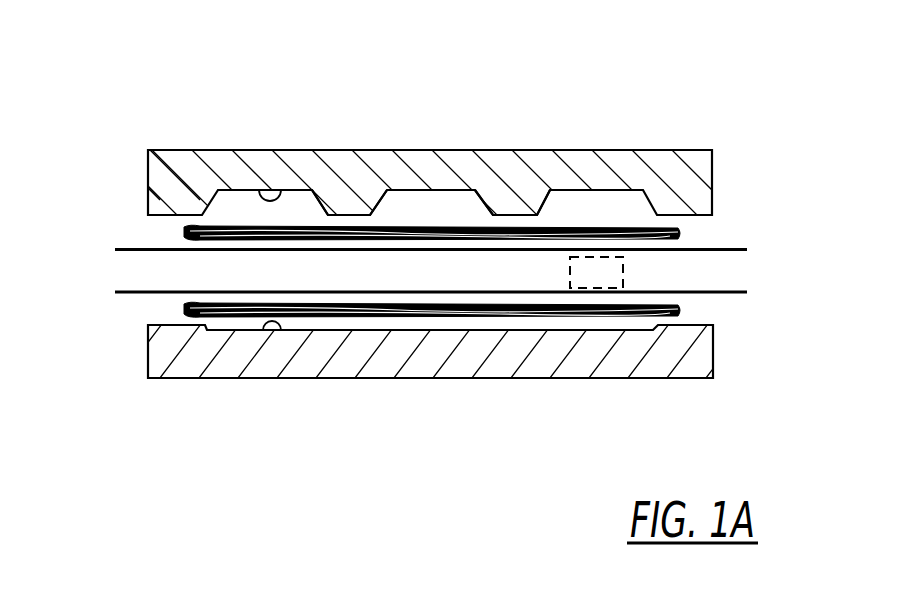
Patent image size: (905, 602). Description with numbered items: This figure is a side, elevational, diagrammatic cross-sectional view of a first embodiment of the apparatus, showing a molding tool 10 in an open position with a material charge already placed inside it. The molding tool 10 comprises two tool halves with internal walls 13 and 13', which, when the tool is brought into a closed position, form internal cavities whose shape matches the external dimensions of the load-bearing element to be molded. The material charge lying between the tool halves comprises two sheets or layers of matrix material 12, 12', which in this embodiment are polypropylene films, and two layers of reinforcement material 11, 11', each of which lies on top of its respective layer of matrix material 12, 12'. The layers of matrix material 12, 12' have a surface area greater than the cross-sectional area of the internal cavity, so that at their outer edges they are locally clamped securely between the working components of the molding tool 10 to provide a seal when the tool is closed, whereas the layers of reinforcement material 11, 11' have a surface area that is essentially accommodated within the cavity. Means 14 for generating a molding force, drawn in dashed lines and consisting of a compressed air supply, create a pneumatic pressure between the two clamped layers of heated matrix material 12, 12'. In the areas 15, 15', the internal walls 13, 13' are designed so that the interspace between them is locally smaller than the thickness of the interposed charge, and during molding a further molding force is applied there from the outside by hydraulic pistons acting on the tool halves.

The molding tool 10 is at (133, 92).
The layer of reinforcement material 11 is at (367, 226).
The layer of reinforcement material 11' is at (366, 328).
The layer of matrix material 12 is at (435, 165).
The layer of matrix material 12' is at (431, 380).
The internal wall 13 is at (271, 142).
The internal wall 13' is at (237, 394).
The means for generating a molding force 14 is at (596, 262).
The area where the interspace is locally smaller 15 is at (349, 148).
The area where the interspace is locally smaller 15' is at (512, 148).